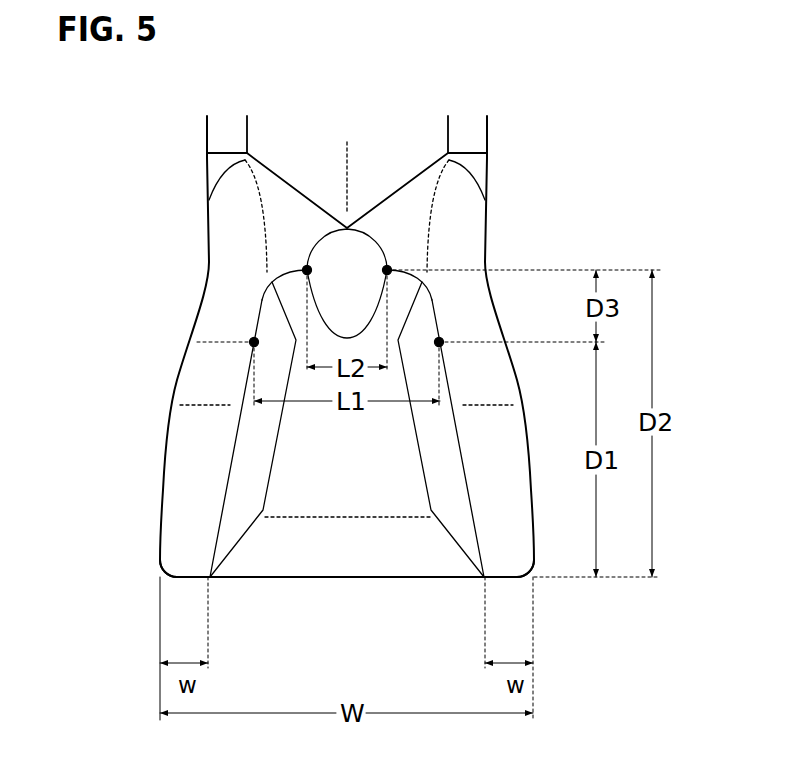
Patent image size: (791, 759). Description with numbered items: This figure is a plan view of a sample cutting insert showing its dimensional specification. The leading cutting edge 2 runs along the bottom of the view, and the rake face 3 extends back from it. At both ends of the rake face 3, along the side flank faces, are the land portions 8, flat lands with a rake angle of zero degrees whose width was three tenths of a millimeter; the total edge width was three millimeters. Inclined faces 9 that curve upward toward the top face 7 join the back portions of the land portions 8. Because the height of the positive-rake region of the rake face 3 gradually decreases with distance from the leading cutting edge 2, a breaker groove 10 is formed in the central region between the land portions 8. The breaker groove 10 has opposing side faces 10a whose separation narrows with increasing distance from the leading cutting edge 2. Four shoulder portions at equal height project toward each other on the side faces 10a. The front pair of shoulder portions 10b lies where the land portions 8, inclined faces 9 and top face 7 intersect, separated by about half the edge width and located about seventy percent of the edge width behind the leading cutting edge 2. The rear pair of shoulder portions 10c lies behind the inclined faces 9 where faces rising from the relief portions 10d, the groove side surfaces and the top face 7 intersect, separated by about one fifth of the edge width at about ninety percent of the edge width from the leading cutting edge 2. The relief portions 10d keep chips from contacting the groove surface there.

The leading cutting edge 2 is at (423, 578).
The rake face 3 is at (185, 567).
The top face 7 is at (222, 138).
The land portion 8 is at (185, 545).
The inclined face 9 is at (208, 385).
The breaker groove 10 is at (345, 462).
The side face 10a is at (248, 462).
The shoulder portion 10b is at (254, 342).
The shoulder portion 10c is at (307, 270).
The relief portion 10d is at (262, 297).